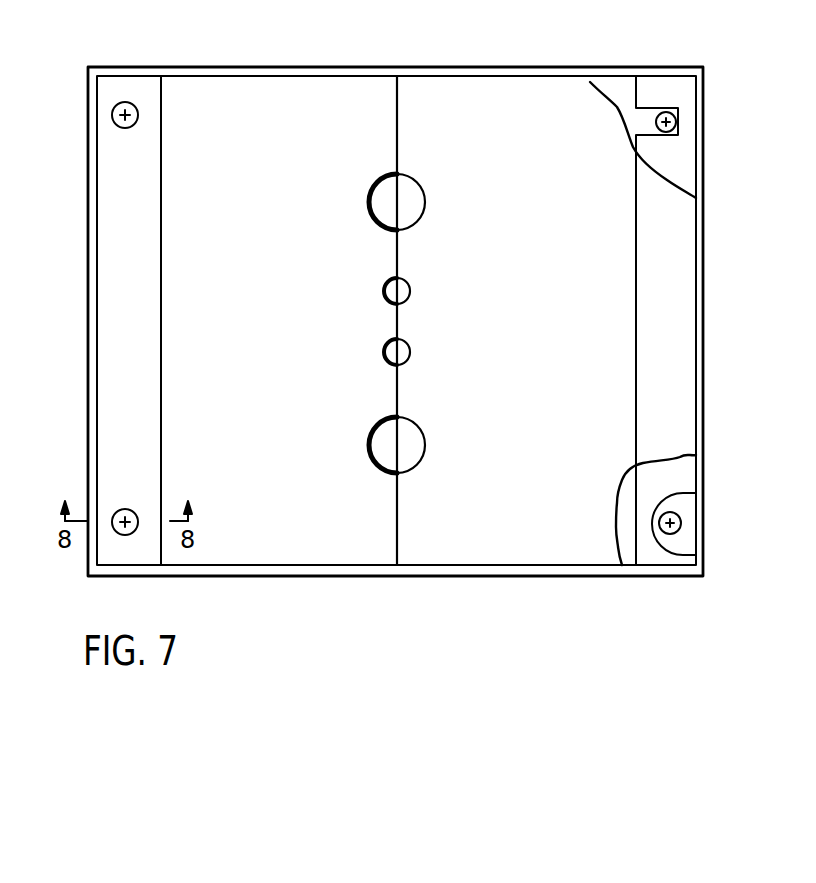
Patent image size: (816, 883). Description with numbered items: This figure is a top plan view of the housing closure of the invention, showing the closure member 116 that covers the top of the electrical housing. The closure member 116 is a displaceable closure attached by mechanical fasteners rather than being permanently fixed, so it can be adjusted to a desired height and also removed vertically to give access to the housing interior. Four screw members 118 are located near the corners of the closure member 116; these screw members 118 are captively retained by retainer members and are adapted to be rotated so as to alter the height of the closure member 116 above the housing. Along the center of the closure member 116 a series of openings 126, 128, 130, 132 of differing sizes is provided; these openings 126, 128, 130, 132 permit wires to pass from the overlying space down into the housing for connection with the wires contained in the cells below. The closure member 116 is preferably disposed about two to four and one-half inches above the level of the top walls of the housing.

The closure member 116 is at (308, 518).
The screw members 118 is at (133, 102).
The opening 126 is at (420, 198).
The opening 128 is at (403, 292).
The opening 130 is at (402, 352).
The opening 132 is at (418, 448).